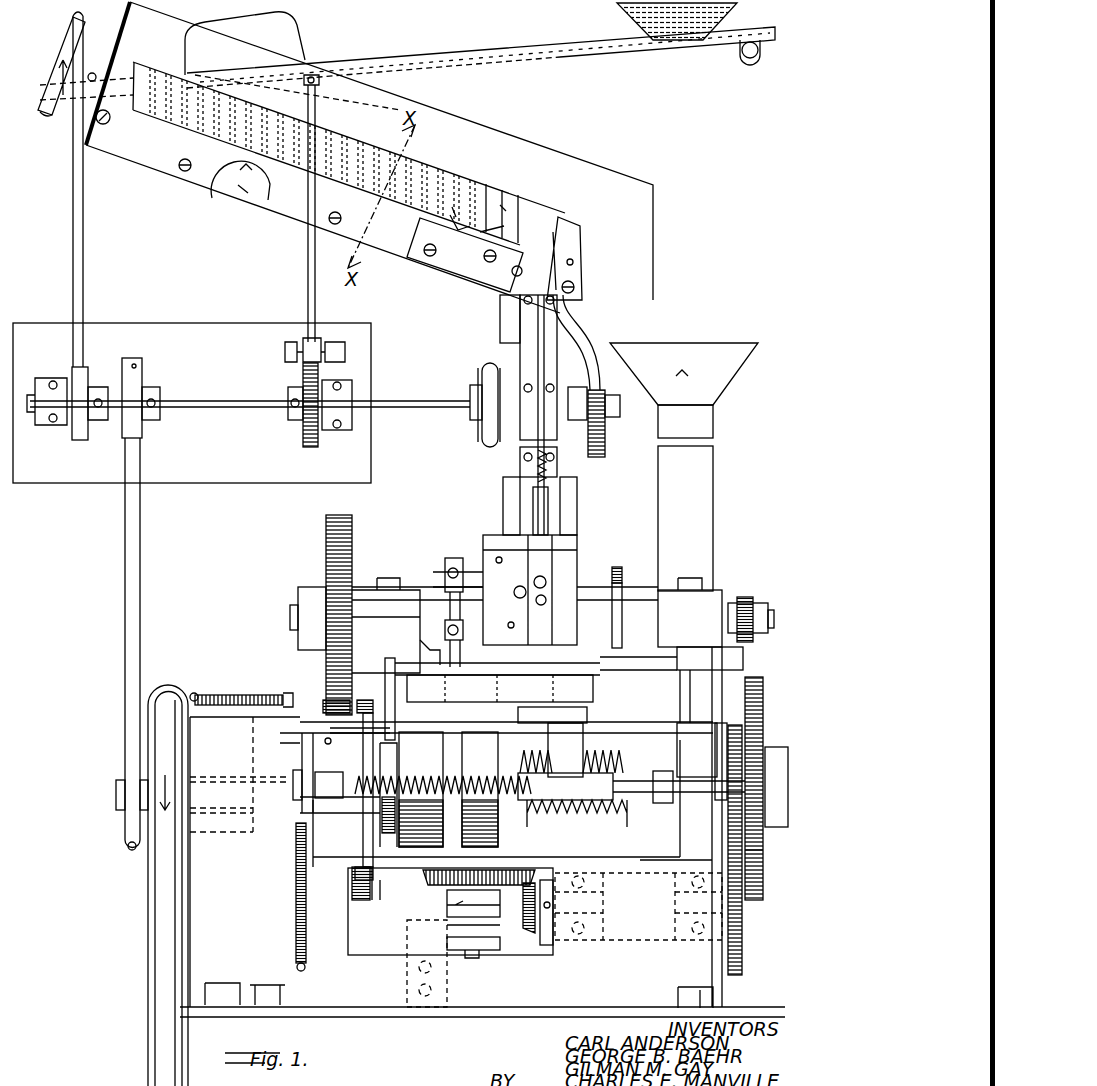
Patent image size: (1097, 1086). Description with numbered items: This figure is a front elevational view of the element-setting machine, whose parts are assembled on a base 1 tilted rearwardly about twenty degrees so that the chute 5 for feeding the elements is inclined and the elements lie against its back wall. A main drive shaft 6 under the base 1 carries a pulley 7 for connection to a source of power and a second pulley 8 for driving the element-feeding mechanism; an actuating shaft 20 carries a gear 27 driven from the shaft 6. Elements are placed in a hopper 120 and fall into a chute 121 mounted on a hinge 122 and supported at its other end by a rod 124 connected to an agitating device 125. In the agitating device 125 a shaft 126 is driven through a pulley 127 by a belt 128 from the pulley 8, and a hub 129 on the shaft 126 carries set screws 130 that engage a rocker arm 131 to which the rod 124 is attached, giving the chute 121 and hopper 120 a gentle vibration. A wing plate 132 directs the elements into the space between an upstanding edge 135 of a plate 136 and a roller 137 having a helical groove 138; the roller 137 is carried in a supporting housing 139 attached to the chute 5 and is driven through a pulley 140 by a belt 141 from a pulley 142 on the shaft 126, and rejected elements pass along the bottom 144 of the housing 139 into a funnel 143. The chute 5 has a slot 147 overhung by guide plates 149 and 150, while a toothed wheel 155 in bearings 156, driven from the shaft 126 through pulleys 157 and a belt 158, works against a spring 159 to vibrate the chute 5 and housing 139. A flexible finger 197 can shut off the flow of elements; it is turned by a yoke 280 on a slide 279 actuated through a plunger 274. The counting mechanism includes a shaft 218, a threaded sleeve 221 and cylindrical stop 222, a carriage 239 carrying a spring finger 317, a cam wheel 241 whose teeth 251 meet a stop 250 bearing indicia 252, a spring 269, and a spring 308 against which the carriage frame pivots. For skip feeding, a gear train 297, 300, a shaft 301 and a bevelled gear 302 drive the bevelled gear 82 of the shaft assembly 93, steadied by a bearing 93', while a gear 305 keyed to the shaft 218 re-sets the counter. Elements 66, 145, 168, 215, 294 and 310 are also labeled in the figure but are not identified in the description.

The base 1 is at (255, 1000).
The chute 5 is at (520, 353).
The main drive shaft 6 is at (116, 798).
The pulley 7 is at (148, 882).
The second pulley 8 is at (122, 847).
The actuating shaft 20 is at (290, 617).
The gear 27 is at (352, 522).
The carriage block 66 is at (500, 688).
The bevelled gear 82 is at (452, 893).
The shaft assembly 93 is at (456, 942).
The steadying bearing 93' is at (433, 936).
The hopper 120 is at (640, 12).
The chute 121 is at (530, 38).
The hinge 122 is at (748, 60).
The rod 124 is at (322, 105).
The agitating device 125 is at (220, 359).
The shaft 126 is at (270, 400).
The pulley 127 is at (142, 436).
The belt 128 is at (133, 516).
The hub 129 is at (300, 436).
The set screws 130 is at (315, 448).
The rocker arm 131 is at (325, 360).
The wing plate 132 is at (297, 40).
The upstanding edge 135 is at (150, 168).
The plate 136 is at (416, 265).
The roller 137 is at (476, 196).
The helical groove 138 is at (452, 205).
The supporting housing 139 is at (548, 129).
The pulley 140 is at (58, 80).
The belt 141 is at (73, 205).
The pulley 142 is at (88, 368).
The funnel 143 is at (750, 337).
The bottom 144 is at (218, 198).
The lever 145 is at (455, 232).
The slot 147 is at (573, 263).
The guide plate 149 is at (560, 470).
The guide plate 150 is at (518, 466).
The toothed wheel 155 is at (606, 440).
The bearings 156 is at (566, 421).
The pulleys 157 is at (482, 380).
The belt 158 is at (486, 428).
The spring 159 is at (578, 348).
The housing 168 is at (578, 566).
The flexible finger 197 is at (548, 510).
The screw 215 is at (618, 567).
The shaft 218 is at (293, 772).
The threaded sleeve 221 is at (590, 826).
The cylindrical stop 222 is at (443, 789).
The carriage 239 is at (631, 776).
The cam wheel 241 is at (368, 897).
The cylindrical stop 250 is at (422, 789).
The complementary teeth 251 is at (376, 875).
The indicia 252 is at (430, 880).
The spring 269 is at (363, 835).
The plunger 274 is at (396, 660).
The slide 279 is at (425, 650).
The yoke 280 is at (448, 565).
The spring 294 is at (272, 688).
The gear 297 is at (758, 735).
The gear 300 is at (742, 950).
The shaft 301 is at (625, 906).
The bevelled gear 302 is at (535, 937).
The gear 305 is at (760, 858).
The spring 308 is at (296, 882).
The bar 310 is at (356, 736).
The spring finger 317 is at (510, 718).